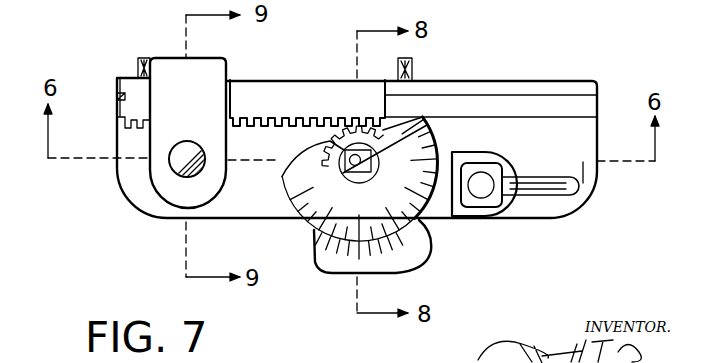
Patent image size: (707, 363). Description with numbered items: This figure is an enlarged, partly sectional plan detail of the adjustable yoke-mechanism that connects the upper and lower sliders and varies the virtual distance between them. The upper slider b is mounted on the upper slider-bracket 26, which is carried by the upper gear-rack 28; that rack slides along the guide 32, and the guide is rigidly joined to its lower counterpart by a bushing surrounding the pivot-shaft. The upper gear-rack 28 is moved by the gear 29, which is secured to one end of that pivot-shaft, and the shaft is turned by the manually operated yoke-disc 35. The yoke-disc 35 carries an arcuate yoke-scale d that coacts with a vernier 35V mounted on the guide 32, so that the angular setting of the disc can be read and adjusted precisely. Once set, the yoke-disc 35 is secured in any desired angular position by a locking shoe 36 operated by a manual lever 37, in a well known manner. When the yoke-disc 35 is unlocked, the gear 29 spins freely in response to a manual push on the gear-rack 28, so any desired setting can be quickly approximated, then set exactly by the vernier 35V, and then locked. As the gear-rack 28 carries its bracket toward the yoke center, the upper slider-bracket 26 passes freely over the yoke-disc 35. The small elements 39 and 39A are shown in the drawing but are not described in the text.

The upper slider-bracket 26 is at (225, 57).
The upper gear-rack 28 is at (283, 109).
The gear 29 is at (323, 143).
The guide 32 is at (502, 81).
The yoke-disc 35 is at (290, 190).
The vernier 35V is at (399, 237).
The locking shoe 36 is at (470, 151).
The manual lever 37 is at (530, 176).
The pawl 39 is at (413, 66).
The pawl 39A is at (146, 36).
The upper slider b is at (182, 140).
The arcuate yoke-scale d is at (317, 232).